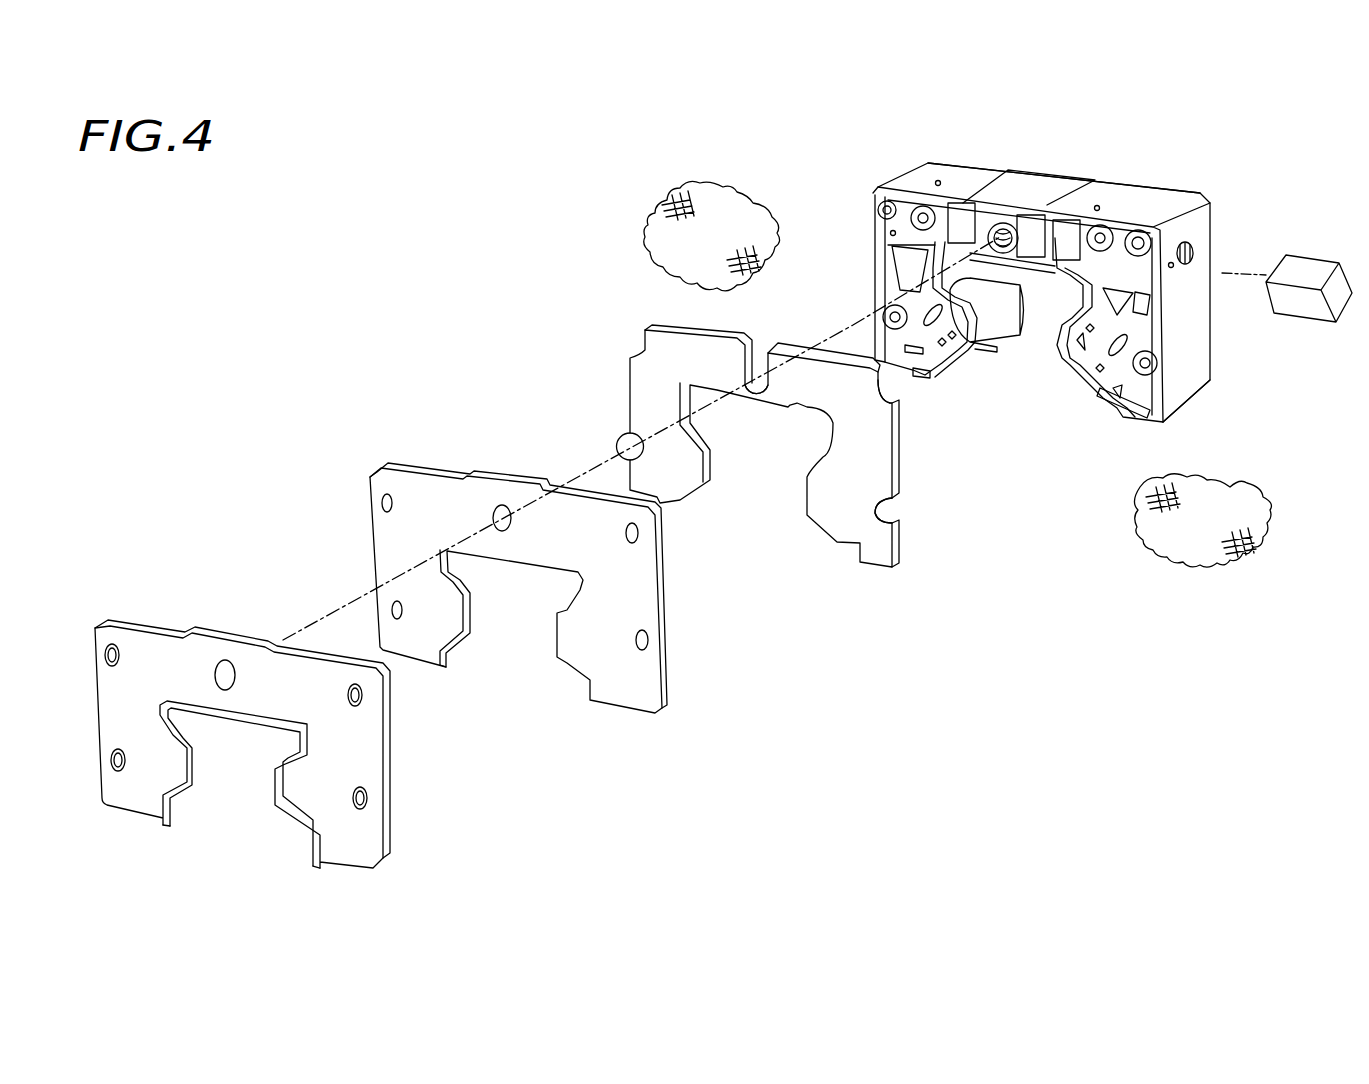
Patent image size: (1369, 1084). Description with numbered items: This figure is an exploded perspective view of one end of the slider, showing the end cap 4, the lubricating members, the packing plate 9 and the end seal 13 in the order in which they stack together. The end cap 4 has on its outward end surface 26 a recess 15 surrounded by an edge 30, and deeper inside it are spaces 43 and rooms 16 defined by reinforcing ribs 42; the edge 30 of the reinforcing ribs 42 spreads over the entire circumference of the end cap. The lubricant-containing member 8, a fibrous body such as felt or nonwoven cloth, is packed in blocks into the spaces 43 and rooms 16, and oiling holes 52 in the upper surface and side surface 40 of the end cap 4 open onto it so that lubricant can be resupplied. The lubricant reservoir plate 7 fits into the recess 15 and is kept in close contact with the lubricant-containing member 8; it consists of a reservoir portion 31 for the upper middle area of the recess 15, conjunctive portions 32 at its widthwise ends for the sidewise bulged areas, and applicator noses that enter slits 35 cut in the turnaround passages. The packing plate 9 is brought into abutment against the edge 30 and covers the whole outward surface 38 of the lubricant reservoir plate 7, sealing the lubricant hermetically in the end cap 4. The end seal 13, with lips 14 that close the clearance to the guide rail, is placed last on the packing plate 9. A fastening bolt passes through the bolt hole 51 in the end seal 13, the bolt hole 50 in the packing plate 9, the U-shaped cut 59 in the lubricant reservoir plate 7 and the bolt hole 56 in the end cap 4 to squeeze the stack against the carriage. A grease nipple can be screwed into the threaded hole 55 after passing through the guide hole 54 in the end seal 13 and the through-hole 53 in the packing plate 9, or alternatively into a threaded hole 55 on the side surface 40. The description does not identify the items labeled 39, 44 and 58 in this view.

The end cap 4 is at (1042, 320).
The lubricant reservoir plate 7 is at (792, 340).
The lubricant-containing member 8 is at (663, 232).
The packing plate 9 is at (522, 550).
The end seal 13 is at (266, 714).
The lips 14 is at (273, 787).
The recess 15 is at (932, 393).
The rooms 16 is at (958, 222).
The outward end surface 26 is at (1050, 232).
The edge 30 is at (878, 232).
The reservoir portion 31 is at (682, 345).
The conjunctive portions 32 is at (754, 437).
The slits 35 is at (935, 338).
The outward surface 38 is at (817, 395).
The top wall 39 is at (953, 170).
The side surface 40 is at (1185, 383).
The reinforcing ribs 42 is at (910, 275).
The spaces 43 is at (1125, 303).
The block 44 is at (1306, 310).
The bolt hole 50 is at (387, 500).
The bolt hole 51 is at (112, 650).
The oiling holes 52 is at (938, 183).
The through-hole 53 is at (500, 513).
The guide hole 54 is at (200, 688).
The threaded hole 55 is at (1193, 248).
The bolt hole 56 is at (882, 208).
The slot 58 is at (762, 378).
The U-shaped cut 59 is at (640, 355).